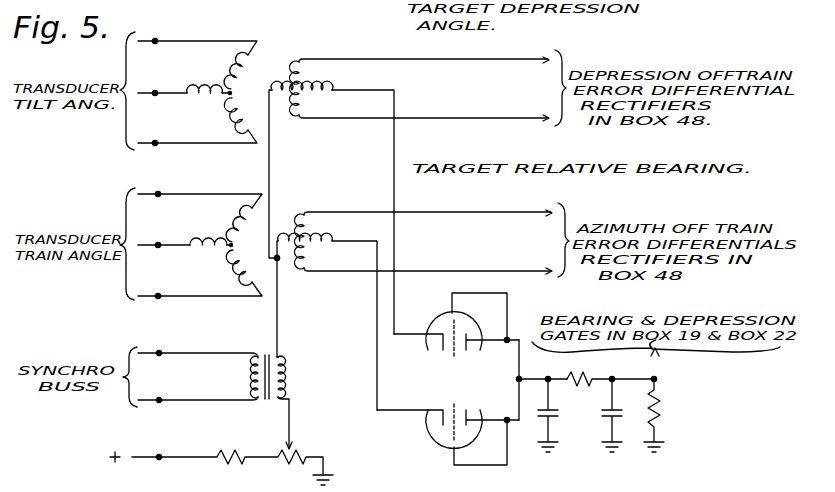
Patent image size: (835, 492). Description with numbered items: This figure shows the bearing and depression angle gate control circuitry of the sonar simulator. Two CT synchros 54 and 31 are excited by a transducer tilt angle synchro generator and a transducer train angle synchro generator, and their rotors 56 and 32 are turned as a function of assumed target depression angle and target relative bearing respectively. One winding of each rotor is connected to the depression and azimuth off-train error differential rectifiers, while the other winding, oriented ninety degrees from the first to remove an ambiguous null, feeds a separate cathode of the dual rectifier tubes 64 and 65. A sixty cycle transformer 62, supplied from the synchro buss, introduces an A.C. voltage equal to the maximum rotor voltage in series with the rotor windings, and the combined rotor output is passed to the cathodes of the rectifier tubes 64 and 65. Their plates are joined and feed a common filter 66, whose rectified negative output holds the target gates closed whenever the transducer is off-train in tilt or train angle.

The CT synchro 54 is at (268, 17).
The CT synchro 31 is at (227, 188).
The rotor 56 is at (404, 9).
The rotor 32 is at (406, 163).
The 60 cycle transformer 62 is at (290, 376).
The dual rectifier tube 64 is at (476, 328).
The dual rectifier tube 65 is at (478, 436).
The filter 66 is at (604, 377).